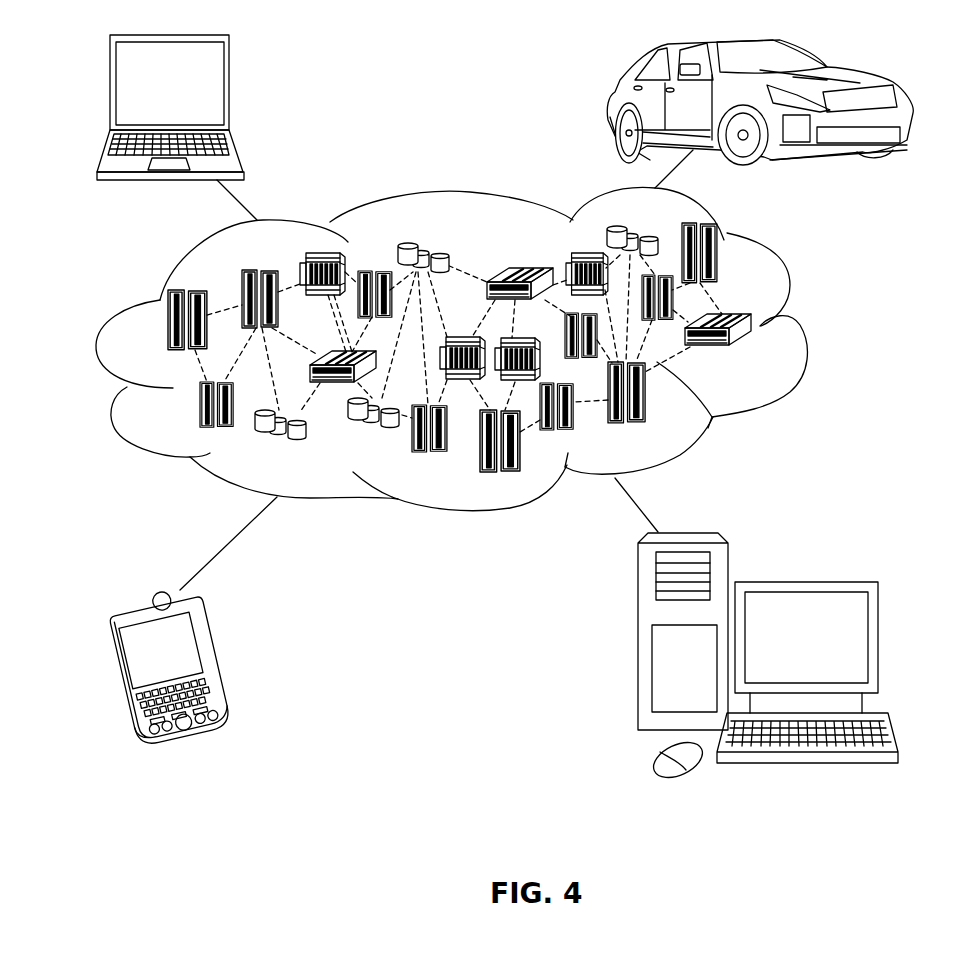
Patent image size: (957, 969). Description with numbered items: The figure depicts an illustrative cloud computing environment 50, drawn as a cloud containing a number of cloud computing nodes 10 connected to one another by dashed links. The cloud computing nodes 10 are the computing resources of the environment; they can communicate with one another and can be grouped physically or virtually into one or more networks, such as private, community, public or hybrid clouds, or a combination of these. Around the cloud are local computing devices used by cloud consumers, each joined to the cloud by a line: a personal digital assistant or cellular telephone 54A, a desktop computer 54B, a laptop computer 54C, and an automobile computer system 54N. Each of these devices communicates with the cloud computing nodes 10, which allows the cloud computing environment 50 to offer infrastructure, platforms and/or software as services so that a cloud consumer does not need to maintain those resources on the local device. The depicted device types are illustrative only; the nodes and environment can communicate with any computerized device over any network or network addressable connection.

The cloud computing node 10 is at (755, 356).
The cloud computing environment 50 is at (807, 329).
The personal digital assistant or cellular telephone 54A is at (222, 661).
The desktop computer 54B is at (804, 582).
The laptop computer 54C is at (231, 90).
The automobile computer system 54N is at (613, 102).